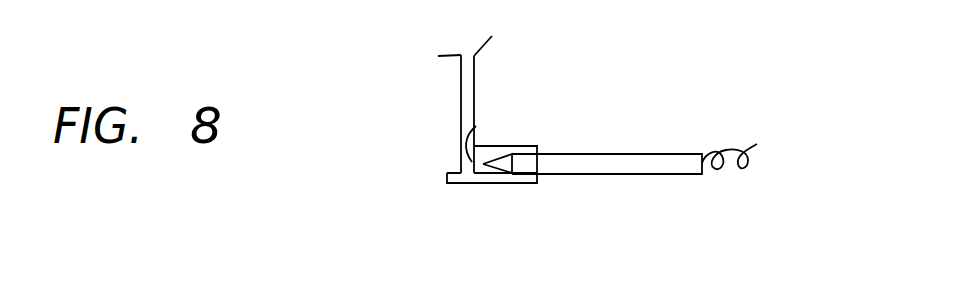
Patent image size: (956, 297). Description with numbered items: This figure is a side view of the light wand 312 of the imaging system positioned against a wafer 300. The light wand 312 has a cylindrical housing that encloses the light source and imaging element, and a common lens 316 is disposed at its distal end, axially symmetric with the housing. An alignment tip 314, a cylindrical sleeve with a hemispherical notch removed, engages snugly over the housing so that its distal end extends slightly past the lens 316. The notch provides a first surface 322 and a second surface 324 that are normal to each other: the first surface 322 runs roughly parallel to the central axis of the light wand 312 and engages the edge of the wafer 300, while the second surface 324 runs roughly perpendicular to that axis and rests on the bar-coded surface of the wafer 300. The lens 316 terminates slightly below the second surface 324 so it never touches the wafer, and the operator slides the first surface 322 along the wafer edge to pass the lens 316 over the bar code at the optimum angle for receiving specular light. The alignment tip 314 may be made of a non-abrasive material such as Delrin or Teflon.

The wafer 300 is at (475, 78).
The light wand 312 is at (643, 164).
The alignment tip 314 is at (518, 183).
The common lens 316 is at (483, 164).
The first surface 322 is at (457, 172).
The second surface 324 is at (476, 126).